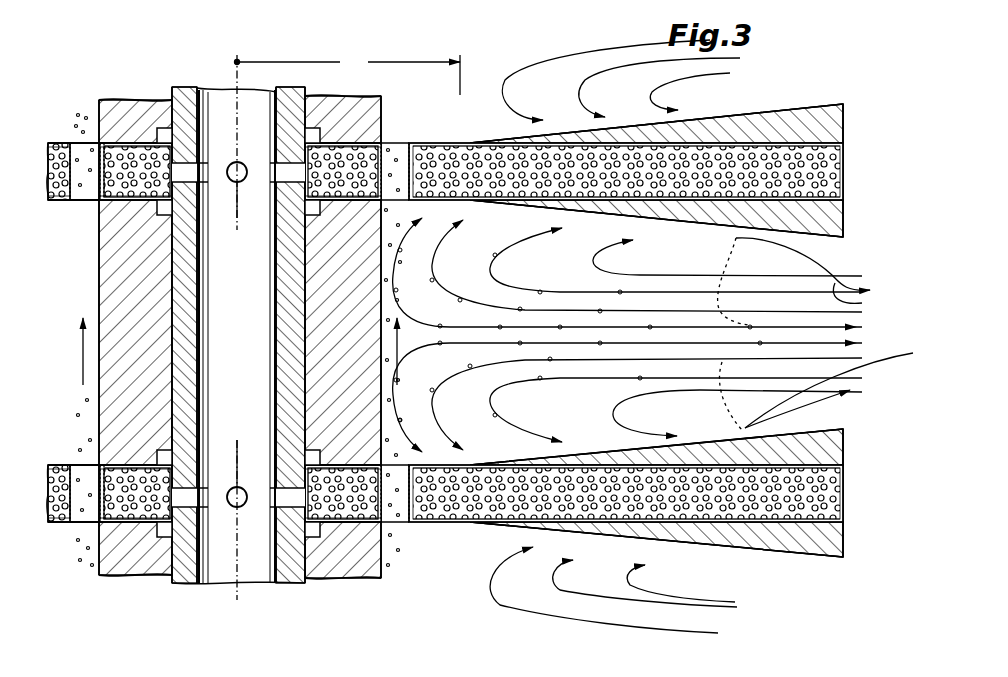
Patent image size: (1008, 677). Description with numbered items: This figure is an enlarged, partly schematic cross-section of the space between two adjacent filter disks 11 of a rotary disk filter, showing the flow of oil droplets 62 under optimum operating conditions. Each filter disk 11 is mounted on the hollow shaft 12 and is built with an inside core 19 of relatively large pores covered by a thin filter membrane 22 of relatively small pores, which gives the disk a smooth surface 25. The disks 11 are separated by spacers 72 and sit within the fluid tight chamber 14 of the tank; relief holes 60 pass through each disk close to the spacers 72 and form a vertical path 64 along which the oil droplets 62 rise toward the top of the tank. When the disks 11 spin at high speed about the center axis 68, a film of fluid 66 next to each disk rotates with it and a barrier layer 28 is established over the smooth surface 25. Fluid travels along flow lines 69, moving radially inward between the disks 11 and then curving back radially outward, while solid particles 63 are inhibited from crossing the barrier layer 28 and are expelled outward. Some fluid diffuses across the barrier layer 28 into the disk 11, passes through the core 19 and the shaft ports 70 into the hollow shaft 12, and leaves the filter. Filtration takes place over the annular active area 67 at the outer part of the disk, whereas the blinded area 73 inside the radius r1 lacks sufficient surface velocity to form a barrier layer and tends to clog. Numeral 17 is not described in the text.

The filter disk 11 is at (547, 150).
The hollow shaft 12 is at (293, 584).
The fluid tight chamber 14 is at (426, 585).
The central bore 17 is at (237, 265).
The inside core 19 is at (717, 158).
The filter membrane 22 is at (608, 150).
The surface of the disk 25 is at (790, 127).
The barrier layer 28 is at (800, 257).
The relief holes 60 is at (82, 200).
The oil droplets 62 is at (85, 117).
The solid particles 63 is at (860, 298).
The vertical path 64 is at (81, 345).
The film of fluid 66 is at (798, 142).
The active area 67 is at (742, 202).
The center axis 68 is at (238, 62).
The flow lines 69 is at (500, 270).
The shaft ports 70 is at (280, 174).
The spacers 72 is at (116, 332).
The blinded area 73 is at (443, 198).